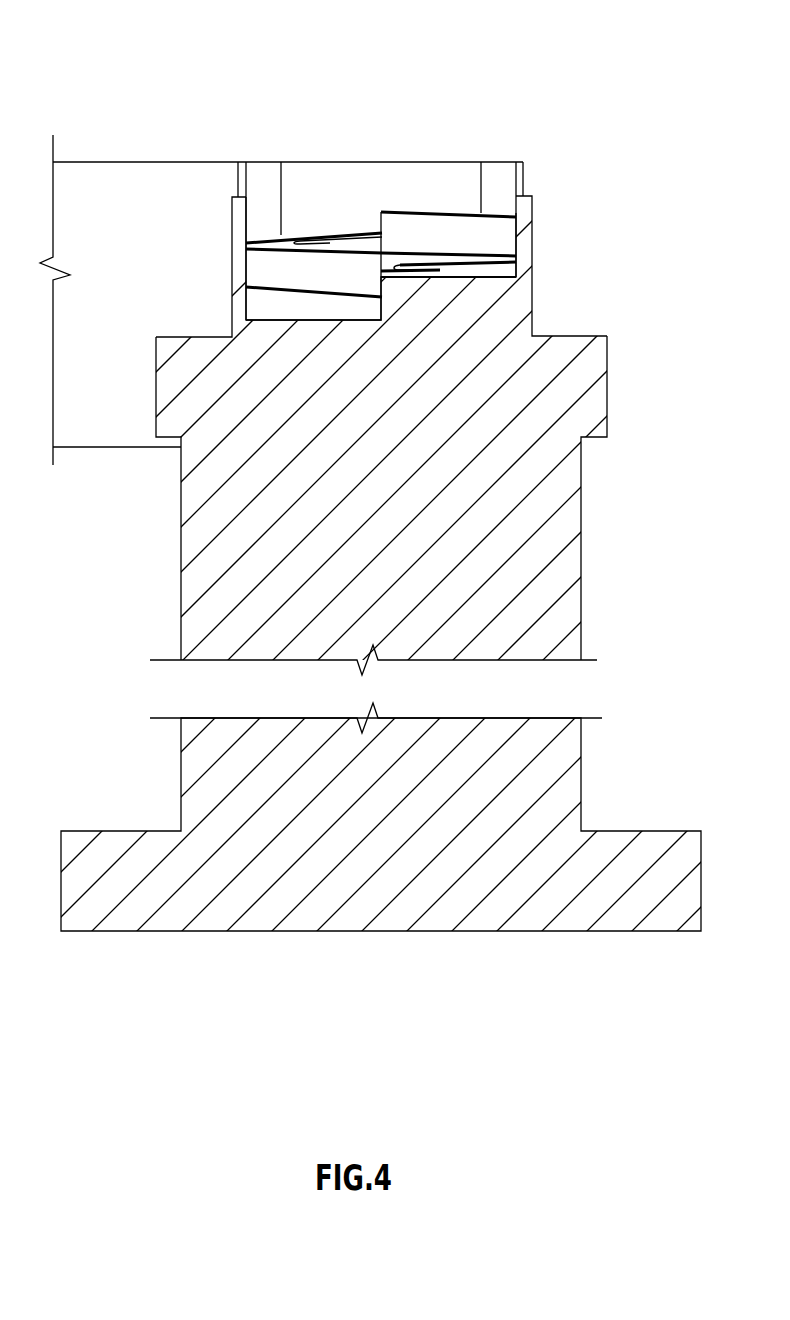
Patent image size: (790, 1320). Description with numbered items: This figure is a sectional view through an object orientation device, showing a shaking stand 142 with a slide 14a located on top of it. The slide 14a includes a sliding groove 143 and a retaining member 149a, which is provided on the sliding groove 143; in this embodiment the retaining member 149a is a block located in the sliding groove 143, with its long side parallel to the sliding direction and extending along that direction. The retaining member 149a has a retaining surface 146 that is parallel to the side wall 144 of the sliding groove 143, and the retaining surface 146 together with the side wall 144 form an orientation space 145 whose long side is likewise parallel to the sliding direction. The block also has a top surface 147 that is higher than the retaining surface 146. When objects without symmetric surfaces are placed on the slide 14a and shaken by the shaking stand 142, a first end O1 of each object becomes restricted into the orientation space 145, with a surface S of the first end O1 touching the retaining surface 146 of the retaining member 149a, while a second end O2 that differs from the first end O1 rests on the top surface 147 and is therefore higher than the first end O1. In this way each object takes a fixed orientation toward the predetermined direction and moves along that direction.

The slide 14a is at (182, 138).
The shaking stand 142 is at (562, 528).
The sliding groove 143 is at (525, 252).
The side wall 144 is at (247, 240).
The orientation space 145 is at (348, 168).
The retaining surface 146 is at (380, 307).
The top surface 147 is at (467, 272).
The retaining member 149a is at (462, 315).
The first end O1 is at (260, 268).
The second end O2 is at (488, 238).
The surface S is at (413, 273).